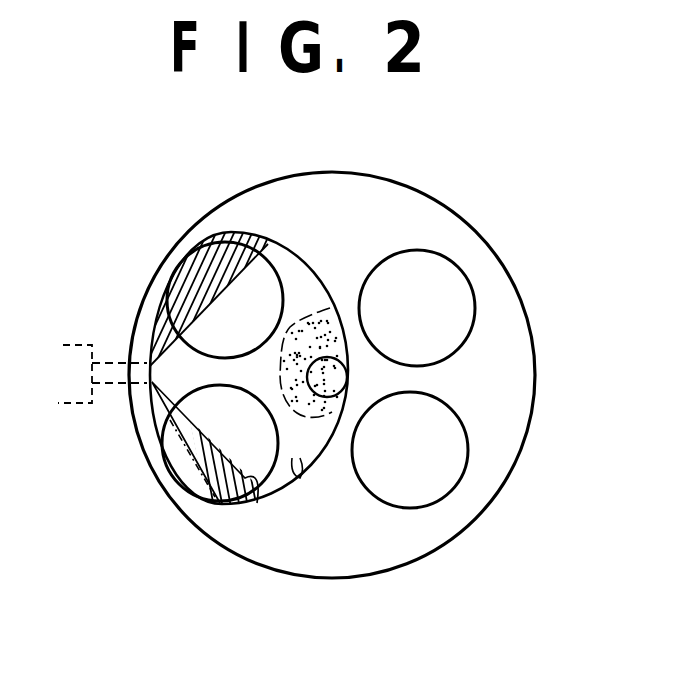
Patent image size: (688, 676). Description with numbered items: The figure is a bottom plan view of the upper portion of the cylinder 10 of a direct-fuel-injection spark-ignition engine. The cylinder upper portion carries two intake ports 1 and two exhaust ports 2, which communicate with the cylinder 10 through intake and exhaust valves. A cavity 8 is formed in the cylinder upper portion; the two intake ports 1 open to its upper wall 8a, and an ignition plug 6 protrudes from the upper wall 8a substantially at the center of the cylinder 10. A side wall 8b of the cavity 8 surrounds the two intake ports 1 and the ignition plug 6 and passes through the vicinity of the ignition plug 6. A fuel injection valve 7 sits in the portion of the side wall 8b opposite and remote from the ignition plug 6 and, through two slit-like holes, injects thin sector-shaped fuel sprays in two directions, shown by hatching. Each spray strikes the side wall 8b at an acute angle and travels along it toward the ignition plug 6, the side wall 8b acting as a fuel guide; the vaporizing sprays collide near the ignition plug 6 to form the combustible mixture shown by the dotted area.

The intake ports 1 is at (258, 300).
The exhaust ports 2 is at (452, 303).
The ignition plug 6 is at (328, 357).
The fuel injection valve 7 is at (68, 345).
The cavity 8 is at (172, 398).
The upper wall 8a is at (307, 283).
The side wall 8b is at (292, 472).
The cylinder 10 is at (531, 355).